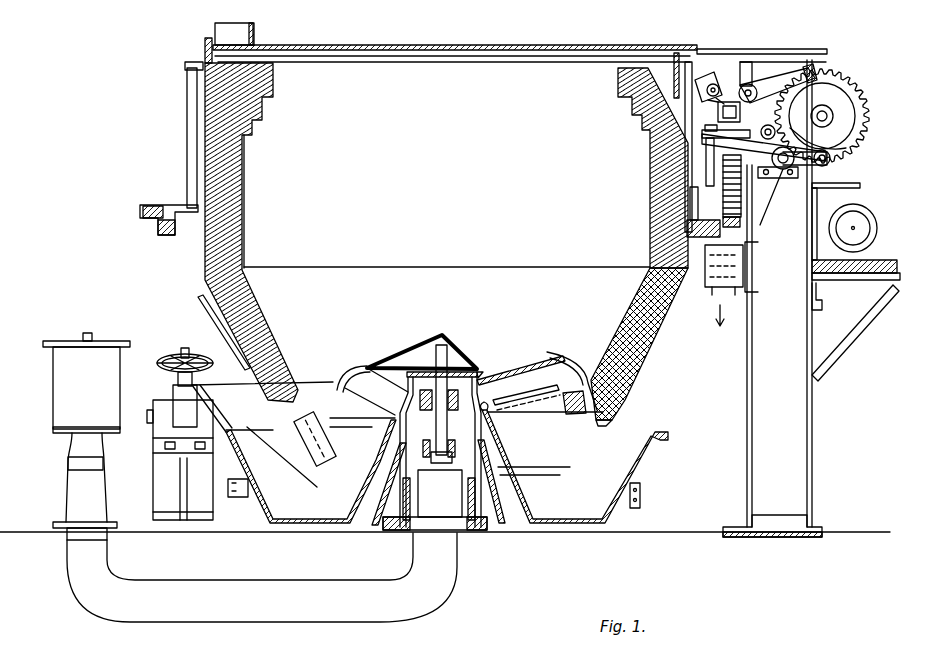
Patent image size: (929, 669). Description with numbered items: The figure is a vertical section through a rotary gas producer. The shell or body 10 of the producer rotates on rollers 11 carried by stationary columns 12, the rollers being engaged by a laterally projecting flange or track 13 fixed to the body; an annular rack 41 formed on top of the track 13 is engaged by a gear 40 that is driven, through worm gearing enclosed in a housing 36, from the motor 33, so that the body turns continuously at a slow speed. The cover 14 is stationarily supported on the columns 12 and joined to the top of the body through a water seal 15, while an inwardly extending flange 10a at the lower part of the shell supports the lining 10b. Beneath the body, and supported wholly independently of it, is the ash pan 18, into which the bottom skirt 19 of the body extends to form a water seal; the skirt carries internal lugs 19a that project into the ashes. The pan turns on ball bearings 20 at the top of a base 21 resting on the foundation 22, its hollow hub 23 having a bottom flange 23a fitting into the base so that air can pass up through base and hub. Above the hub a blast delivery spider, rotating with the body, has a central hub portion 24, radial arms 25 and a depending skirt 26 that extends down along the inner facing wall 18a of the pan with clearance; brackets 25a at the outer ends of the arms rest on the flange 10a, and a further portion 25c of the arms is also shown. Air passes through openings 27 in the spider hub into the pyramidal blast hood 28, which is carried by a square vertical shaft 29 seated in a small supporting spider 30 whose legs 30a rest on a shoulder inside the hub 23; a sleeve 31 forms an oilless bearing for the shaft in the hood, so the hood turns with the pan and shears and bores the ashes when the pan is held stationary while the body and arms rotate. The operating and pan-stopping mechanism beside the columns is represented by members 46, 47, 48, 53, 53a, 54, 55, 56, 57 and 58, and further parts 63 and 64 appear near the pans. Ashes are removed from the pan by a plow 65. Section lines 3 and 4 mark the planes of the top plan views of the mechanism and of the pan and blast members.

The section line 3- 3 is at (205, 48).
The section line 4- 4 is at (660, 333).
The shell or body of the producer 10 is at (240, 236).
The inwardly extending flange 10a is at (614, 412).
The lining of the producer body 10b is at (639, 344).
The rollers 11 is at (716, 292).
The stationary columns 12 is at (808, 425).
The flange or track 13 is at (162, 238).
The producer body cover 14 is at (470, 57).
The water seal 15 is at (670, 82).
The ash pan 18 is at (566, 535).
The inner facing wall of the ash pan 18a is at (518, 486).
The flange or skirt 19 is at (300, 458).
The internal lugs or flanges 19a is at (322, 472).
The ball bearings 20 is at (394, 490).
The base 21 is at (437, 600).
The foundation 22 is at (517, 535).
The hollow hub portion 23 is at (498, 450).
The flange 23a is at (410, 497).
The central or hub portion of the spider 24 is at (510, 379).
The radial arms 25 is at (385, 396).
The brackets 25a is at (573, 405).
The chute portion 25c is at (526, 401).
The depending facing skirt 26 is at (392, 445).
The openings 27 is at (478, 372).
The central blast hood 28 is at (417, 352).
The vertical shaft 29 is at (452, 345).
The small supporting spider 30 is at (462, 410).
The legs of the supporting spider 30a is at (492, 468).
The sleeve 31 is at (426, 410).
The motor 33 is at (874, 218).
The housing 36 is at (870, 229).
The gear 40 is at (724, 205).
The annular rack 41 is at (152, 205).
The lever 46 is at (766, 80).
The gear 47 is at (858, 96).
The shaft 48 is at (833, 117).
The hub 53 is at (848, 126).
The cam 53a is at (838, 141).
The shelf 54 is at (858, 186).
The link 55 is at (806, 165).
The link 56 is at (781, 172).
The arm 57 is at (765, 166).
The rod 58 is at (706, 165).
The valve 63 is at (245, 498).
The bracket 64 is at (636, 506).
The plow 65 is at (278, 446).